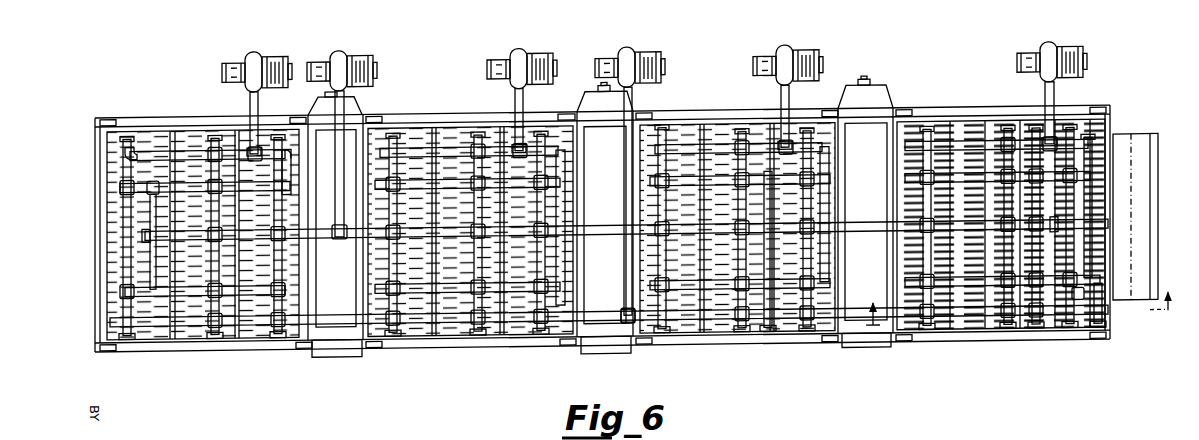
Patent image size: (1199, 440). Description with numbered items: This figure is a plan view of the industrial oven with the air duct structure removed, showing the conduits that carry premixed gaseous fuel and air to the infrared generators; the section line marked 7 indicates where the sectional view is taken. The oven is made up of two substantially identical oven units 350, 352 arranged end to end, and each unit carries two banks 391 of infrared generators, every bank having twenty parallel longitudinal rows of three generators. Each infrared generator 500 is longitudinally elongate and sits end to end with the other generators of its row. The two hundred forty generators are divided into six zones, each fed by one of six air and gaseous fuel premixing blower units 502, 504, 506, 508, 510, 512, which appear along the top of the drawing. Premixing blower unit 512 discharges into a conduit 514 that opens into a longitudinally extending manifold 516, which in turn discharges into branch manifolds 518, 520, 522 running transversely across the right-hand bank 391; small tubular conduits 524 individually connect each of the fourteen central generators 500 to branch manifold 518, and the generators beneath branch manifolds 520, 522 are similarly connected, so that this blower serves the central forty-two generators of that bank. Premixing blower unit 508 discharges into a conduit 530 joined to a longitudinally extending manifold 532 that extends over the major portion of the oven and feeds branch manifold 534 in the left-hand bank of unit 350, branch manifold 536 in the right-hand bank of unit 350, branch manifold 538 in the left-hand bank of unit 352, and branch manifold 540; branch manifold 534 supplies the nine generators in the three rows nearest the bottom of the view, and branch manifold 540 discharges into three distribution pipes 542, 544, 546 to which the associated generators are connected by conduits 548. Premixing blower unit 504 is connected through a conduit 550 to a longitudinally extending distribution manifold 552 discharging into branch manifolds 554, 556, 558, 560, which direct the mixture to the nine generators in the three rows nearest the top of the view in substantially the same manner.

The oven unit 350 is at (197, 110).
The oven unit 352 is at (908, 108).
The bank of infrared generators 391 is at (118, 244).
The infrared generator 500 is at (108, 312).
The air and gaseous fuel premixing blower unit 502 is at (276, 62).
The air and gaseous fuel premixing blower unit 504 is at (356, 62).
The air and gaseous fuel premixing blower unit 506 is at (541, 60).
The air and gaseous fuel premixing blower unit 508 is at (649, 60).
The air and gaseous fuel premixing blower unit 510 is at (795, 58).
The air and gaseous fuel premixing blower unit 512 is at (1062, 58).
The conduit 514 is at (1058, 108).
The longitudinally extending manifold 516 is at (934, 146).
The branch manifold 518 is at (928, 206).
The branch manifold 520 is at (1064, 213).
The branch manifold 522 is at (1088, 246).
The small tubular conduit 524 is at (942, 250).
The conduit 530 is at (636, 118).
The longitudinally extending manifold 532 is at (600, 330).
The branch manifold 534 is at (192, 294).
The branch manifold 536 is at (465, 290).
The branch manifold 538 is at (690, 296).
The branch manifold 540 is at (986, 294).
The distribution pipe 542 is at (926, 342).
The distribution pipe 544 is at (1026, 302).
The distribution pipe 546 is at (1076, 328).
The conduit 548 is at (1096, 325).
The conduit 550 is at (345, 130).
The longitudinally extending distribution manifold 552 is at (333, 225).
The branch manifold 554 is at (204, 237).
The branch manifold 556 is at (452, 186).
The branch manifold 558 is at (717, 182).
The branch manifold 560 is at (976, 182).
The section line 7- 7 is at (1020, 318).